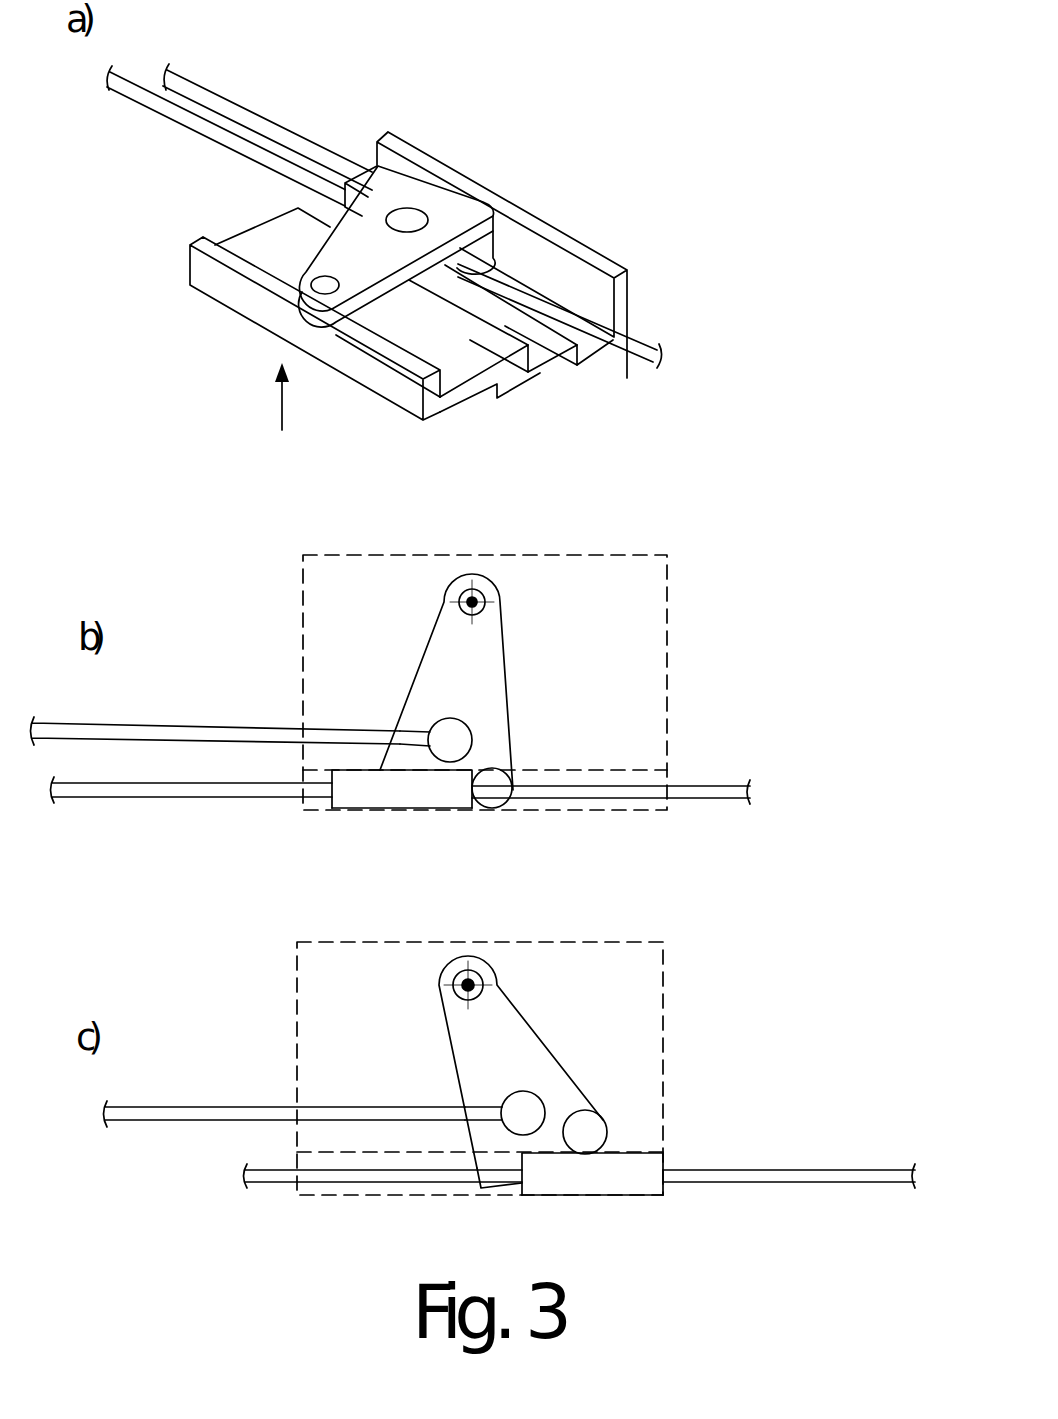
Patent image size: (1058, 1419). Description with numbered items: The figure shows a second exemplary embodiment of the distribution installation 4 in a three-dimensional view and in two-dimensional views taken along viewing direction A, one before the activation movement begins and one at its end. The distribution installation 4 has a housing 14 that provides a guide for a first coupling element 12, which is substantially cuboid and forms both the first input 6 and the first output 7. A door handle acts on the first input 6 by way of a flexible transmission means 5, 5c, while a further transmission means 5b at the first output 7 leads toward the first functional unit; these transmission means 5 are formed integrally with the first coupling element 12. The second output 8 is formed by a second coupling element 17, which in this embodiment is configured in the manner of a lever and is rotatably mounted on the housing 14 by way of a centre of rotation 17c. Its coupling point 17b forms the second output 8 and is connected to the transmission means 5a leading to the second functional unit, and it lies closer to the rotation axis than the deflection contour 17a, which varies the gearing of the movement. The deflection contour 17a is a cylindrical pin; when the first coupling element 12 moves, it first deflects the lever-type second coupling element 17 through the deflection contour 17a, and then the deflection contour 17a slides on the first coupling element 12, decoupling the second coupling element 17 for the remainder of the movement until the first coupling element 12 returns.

The distribution installation 4 is at (632, 145).
The flexible transmission means 5 is at (473, 636).
The transmission means 5a is at (195, 130).
The further transmission means 5b is at (232, 102).
The flexible transmission means 5c is at (630, 352).
The first input 6 is at (455, 802).
The first output 7 is at (358, 172).
The second output 8 is at (445, 735).
The first coupling element 12 is at (412, 797).
The housing 14 is at (625, 301).
The second coupling element 17 is at (347, 243).
The deflection contour 17a is at (490, 256).
The coupling point 17b is at (405, 222).
The centre of rotation 17c is at (320, 286).
The viewing direction A is at (278, 398).